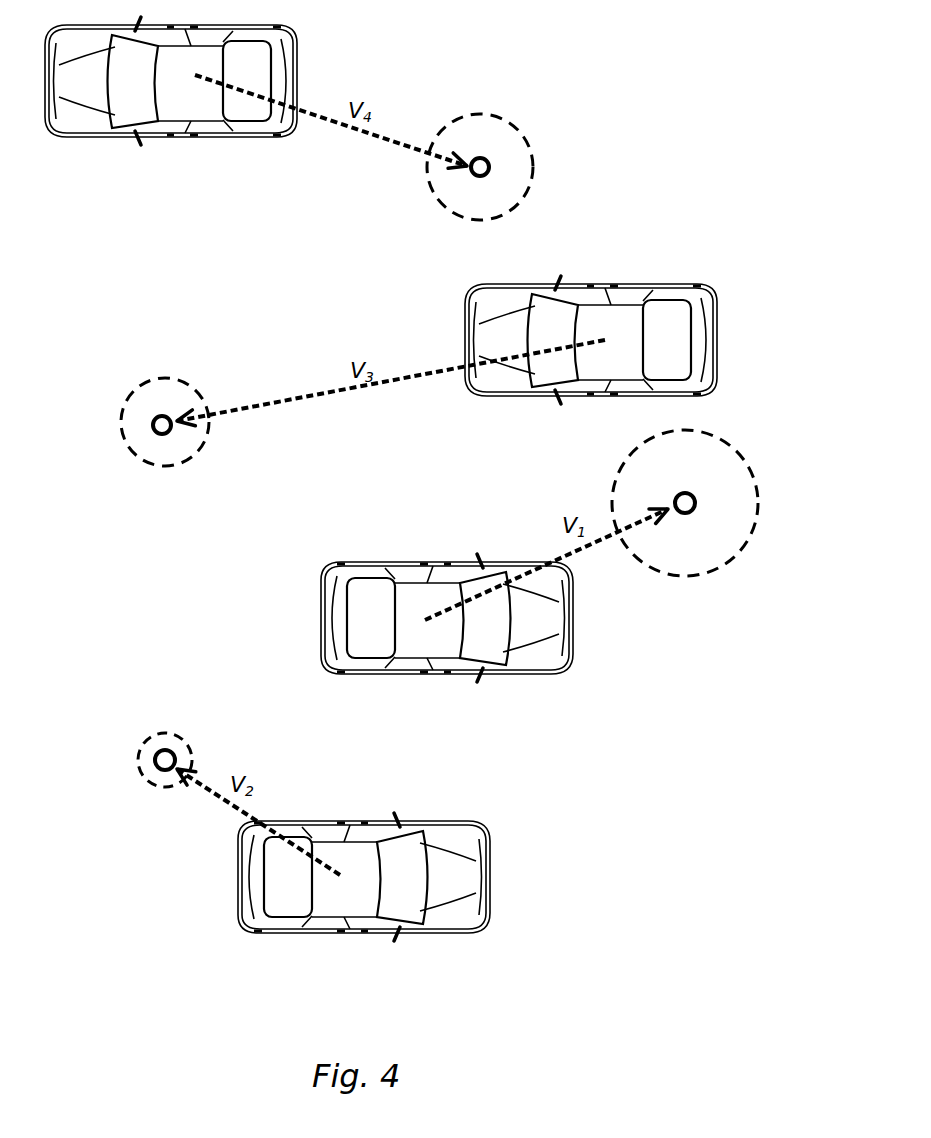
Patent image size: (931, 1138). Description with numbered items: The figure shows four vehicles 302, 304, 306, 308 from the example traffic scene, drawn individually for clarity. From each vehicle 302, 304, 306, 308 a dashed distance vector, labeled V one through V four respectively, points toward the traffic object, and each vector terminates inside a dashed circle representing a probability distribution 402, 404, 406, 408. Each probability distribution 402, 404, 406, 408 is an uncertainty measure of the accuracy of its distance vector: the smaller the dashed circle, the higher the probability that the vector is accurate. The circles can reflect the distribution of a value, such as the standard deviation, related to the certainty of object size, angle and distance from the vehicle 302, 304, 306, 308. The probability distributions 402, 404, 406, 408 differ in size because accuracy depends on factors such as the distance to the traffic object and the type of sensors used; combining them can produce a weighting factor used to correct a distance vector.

The vehicle 302 is at (575, 637).
The vehicle 304 is at (491, 893).
The vehicle 306 is at (718, 331).
The vehicle 308 is at (299, 63).
The probability distribution 402 is at (725, 443).
The probability distribution 404 is at (148, 740).
The probability distribution 406 is at (138, 388).
The probability distribution 408 is at (520, 128).